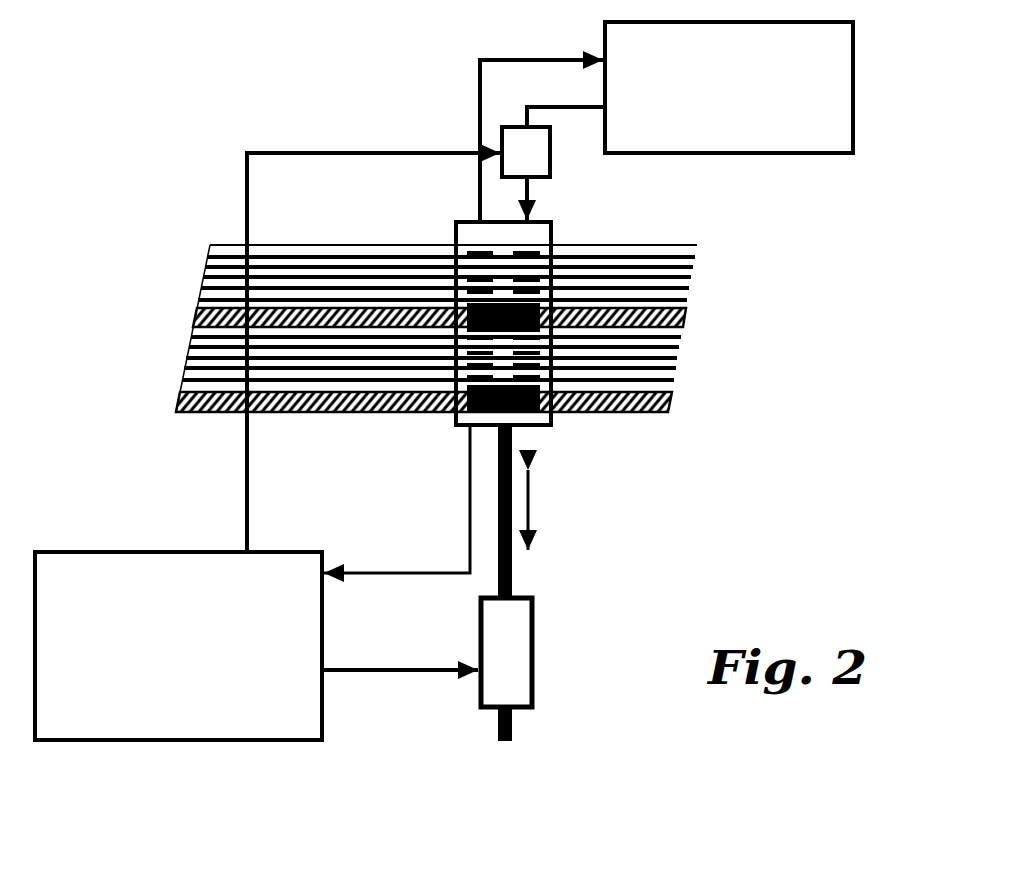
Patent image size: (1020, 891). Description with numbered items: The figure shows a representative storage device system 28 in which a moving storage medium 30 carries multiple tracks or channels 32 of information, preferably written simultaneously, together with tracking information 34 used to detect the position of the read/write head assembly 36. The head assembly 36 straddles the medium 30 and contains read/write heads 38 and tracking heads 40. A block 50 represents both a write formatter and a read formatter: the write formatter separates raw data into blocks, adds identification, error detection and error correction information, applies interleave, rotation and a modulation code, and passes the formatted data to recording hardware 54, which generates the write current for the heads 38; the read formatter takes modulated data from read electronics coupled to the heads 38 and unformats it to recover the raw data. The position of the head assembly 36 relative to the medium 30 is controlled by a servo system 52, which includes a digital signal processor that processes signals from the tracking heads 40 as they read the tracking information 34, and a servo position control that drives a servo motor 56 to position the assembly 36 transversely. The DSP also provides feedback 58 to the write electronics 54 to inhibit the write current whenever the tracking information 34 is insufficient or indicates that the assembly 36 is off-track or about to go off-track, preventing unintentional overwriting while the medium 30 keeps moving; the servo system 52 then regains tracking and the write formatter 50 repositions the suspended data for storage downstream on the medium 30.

The system 28 is at (170, 135).
The storage medium 30 is at (301, 243).
The tracks or channels 32 is at (672, 340).
The tracking information 34 is at (685, 317).
The read/write head assembly 36 is at (526, 422).
The read/write heads 38 is at (537, 238).
The tracking heads 40 is at (503, 303).
The read formatter and write formatter 50 is at (855, 75).
The servo system 52 is at (205, 548).
The recording hardware 54 is at (550, 153).
The servo motor 56 is at (534, 657).
The feedback 58 is at (247, 200).